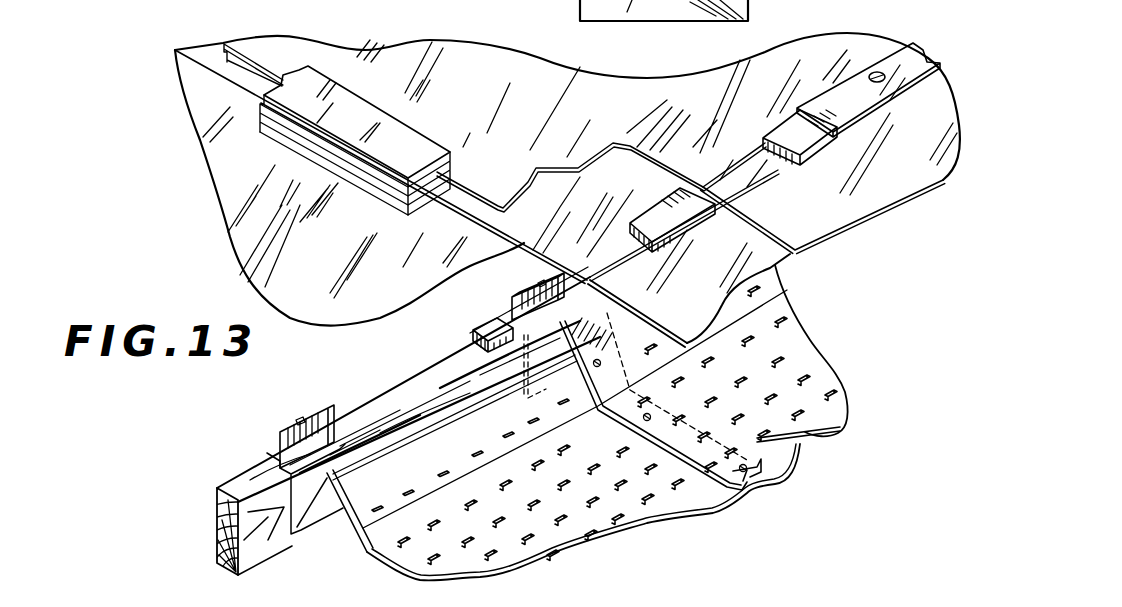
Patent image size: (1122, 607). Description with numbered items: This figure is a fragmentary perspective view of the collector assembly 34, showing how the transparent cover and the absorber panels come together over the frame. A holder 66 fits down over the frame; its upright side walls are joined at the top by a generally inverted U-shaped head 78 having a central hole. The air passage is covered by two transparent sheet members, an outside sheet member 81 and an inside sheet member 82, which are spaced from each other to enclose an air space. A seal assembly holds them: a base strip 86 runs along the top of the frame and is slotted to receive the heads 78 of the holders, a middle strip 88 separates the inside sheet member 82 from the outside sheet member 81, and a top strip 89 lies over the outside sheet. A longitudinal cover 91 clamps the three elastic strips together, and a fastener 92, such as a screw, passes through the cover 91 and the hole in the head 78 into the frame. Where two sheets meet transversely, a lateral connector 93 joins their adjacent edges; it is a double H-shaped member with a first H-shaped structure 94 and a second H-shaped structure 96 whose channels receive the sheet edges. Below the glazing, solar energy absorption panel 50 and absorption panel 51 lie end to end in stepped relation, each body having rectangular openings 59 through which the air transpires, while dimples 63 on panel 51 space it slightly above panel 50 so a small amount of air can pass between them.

The solar collector panel 34 is at (202, 225).
The absorption panel 50 is at (376, 547).
The absorption panel 51 is at (582, 422).
The openings 59 is at (683, 487).
The dimples 63 is at (754, 487).
The holder 66 is at (270, 442).
The head 78 is at (528, 304).
The outside sheet member 81 is at (493, 95).
The inside sheet member 82 is at (603, 165).
The base strip 86 is at (483, 330).
The middle strip 88 is at (663, 200).
The top strip 89 is at (797, 137).
The cover 91 is at (875, 68).
The fastener 92 is at (877, 72).
The lateral connector 93 is at (342, 140).
The first H-shaped structure 94 is at (416, 149).
The second H-shaped structure 96 is at (383, 203).